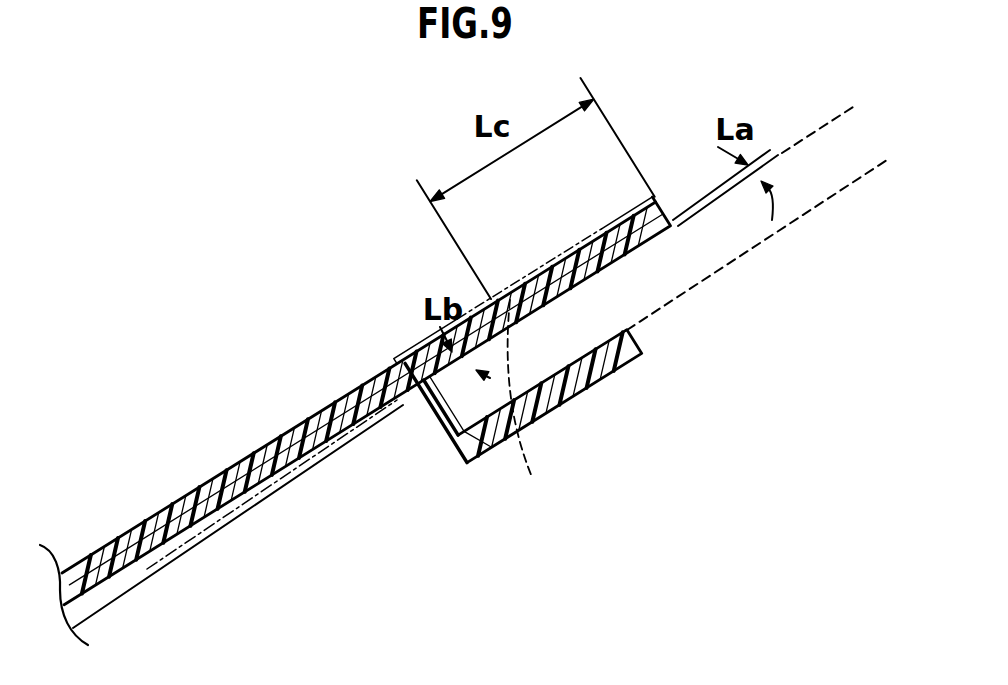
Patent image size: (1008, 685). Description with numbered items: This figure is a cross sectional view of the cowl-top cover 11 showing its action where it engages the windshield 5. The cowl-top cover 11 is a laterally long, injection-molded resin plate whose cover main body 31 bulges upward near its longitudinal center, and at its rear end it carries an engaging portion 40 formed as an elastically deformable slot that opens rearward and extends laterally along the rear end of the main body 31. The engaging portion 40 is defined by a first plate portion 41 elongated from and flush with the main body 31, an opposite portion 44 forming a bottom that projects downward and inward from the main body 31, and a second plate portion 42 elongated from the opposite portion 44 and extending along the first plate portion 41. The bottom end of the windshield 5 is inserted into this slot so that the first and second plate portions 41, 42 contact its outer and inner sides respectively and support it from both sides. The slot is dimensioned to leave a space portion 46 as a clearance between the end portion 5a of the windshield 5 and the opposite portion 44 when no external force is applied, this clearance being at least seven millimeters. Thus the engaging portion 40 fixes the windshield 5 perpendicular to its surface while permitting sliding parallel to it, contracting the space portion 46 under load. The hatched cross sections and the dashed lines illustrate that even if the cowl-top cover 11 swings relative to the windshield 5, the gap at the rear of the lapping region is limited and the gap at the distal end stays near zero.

The windshield 5 is at (760, 240).
The end portion of the windshield 5a is at (529, 406).
The cowl-top cover 11 is at (182, 498).
The cover main body 31 is at (107, 547).
The engaging portion 40 is at (558, 262).
The first plate portion 41 is at (513, 290).
The second plate portion 42 is at (597, 390).
The opposite portion 44 is at (433, 428).
The space portion 46 is at (480, 460).